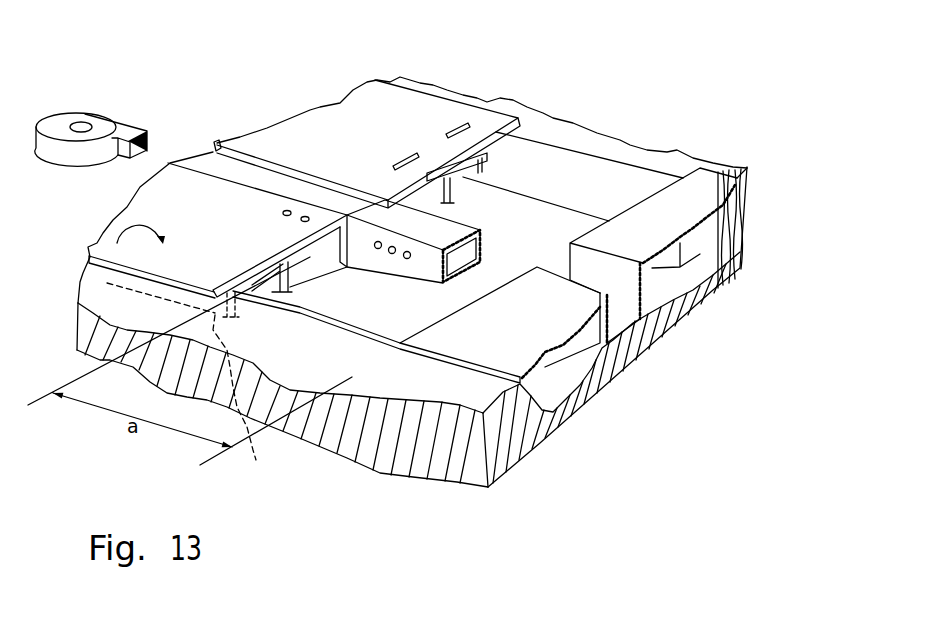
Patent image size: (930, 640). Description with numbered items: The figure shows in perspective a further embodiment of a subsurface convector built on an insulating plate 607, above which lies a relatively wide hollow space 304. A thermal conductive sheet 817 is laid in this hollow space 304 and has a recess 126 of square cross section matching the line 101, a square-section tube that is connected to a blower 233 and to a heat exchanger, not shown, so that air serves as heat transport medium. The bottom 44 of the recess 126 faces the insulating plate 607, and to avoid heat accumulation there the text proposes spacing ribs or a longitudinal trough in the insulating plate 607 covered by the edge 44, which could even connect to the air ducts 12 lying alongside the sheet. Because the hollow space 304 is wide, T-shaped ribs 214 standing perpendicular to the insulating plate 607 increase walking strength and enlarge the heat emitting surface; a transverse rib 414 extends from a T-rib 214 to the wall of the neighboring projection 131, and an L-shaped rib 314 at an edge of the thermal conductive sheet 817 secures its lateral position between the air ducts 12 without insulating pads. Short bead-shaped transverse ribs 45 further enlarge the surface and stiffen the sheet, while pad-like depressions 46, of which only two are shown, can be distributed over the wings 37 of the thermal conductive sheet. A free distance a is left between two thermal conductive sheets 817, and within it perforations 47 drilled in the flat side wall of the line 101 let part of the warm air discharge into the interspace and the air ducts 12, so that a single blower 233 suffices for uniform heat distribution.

The air ducts 12 is at (412, 199).
The wings of the thermal conductive sheet 37 is at (375, 92).
The bottom of the recess 44 is at (352, 268).
The transverse ribs 45 is at (447, 135).
The pad-like depressions 46 is at (305, 216).
The perforation 47 is at (406, 259).
The line 101 is at (468, 218).
The recess 126 is at (232, 151).
The projection 131 is at (450, 390).
The ribs 214 is at (444, 192).
The blower 233 is at (100, 124).
The hollow space 304 is at (578, 180).
The L-shaped rib 314 is at (193, 381).
The transverse rib 414 is at (474, 156).
The insulating plate 607 is at (502, 465).
The thermal conductive sheet 817 is at (90, 271).